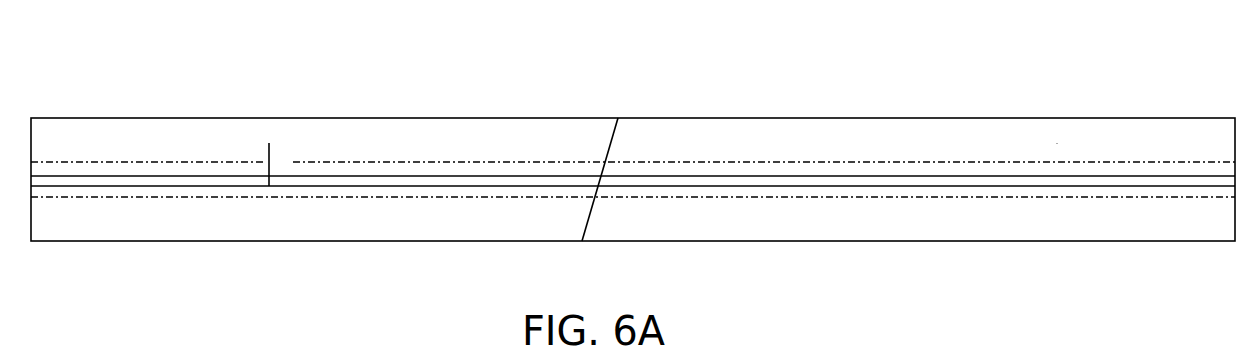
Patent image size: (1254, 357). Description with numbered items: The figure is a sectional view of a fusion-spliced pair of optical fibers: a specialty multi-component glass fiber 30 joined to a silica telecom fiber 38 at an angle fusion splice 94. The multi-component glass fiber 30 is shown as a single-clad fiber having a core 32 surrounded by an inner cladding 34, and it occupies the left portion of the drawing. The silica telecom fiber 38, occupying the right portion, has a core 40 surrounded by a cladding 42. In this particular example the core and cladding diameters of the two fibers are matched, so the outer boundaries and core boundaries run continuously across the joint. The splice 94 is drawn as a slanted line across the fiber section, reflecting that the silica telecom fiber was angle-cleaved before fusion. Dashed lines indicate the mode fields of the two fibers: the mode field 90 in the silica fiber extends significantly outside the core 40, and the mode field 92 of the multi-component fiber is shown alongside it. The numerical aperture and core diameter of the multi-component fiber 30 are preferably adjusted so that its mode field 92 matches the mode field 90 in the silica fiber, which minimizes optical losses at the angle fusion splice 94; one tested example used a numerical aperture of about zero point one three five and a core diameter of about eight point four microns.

The multi-component glass fiber 30 is at (128, 99).
The core 32 is at (269, 143).
The inner cladding 34 is at (363, 137).
The silica telecom fiber 38 is at (922, 93).
The core 40 is at (932, 183).
The cladding 42 is at (1057, 143).
The mode field 90 is at (678, 150).
The mode field 92 is at (436, 150).
The angle fusion splice 94 is at (601, 165).